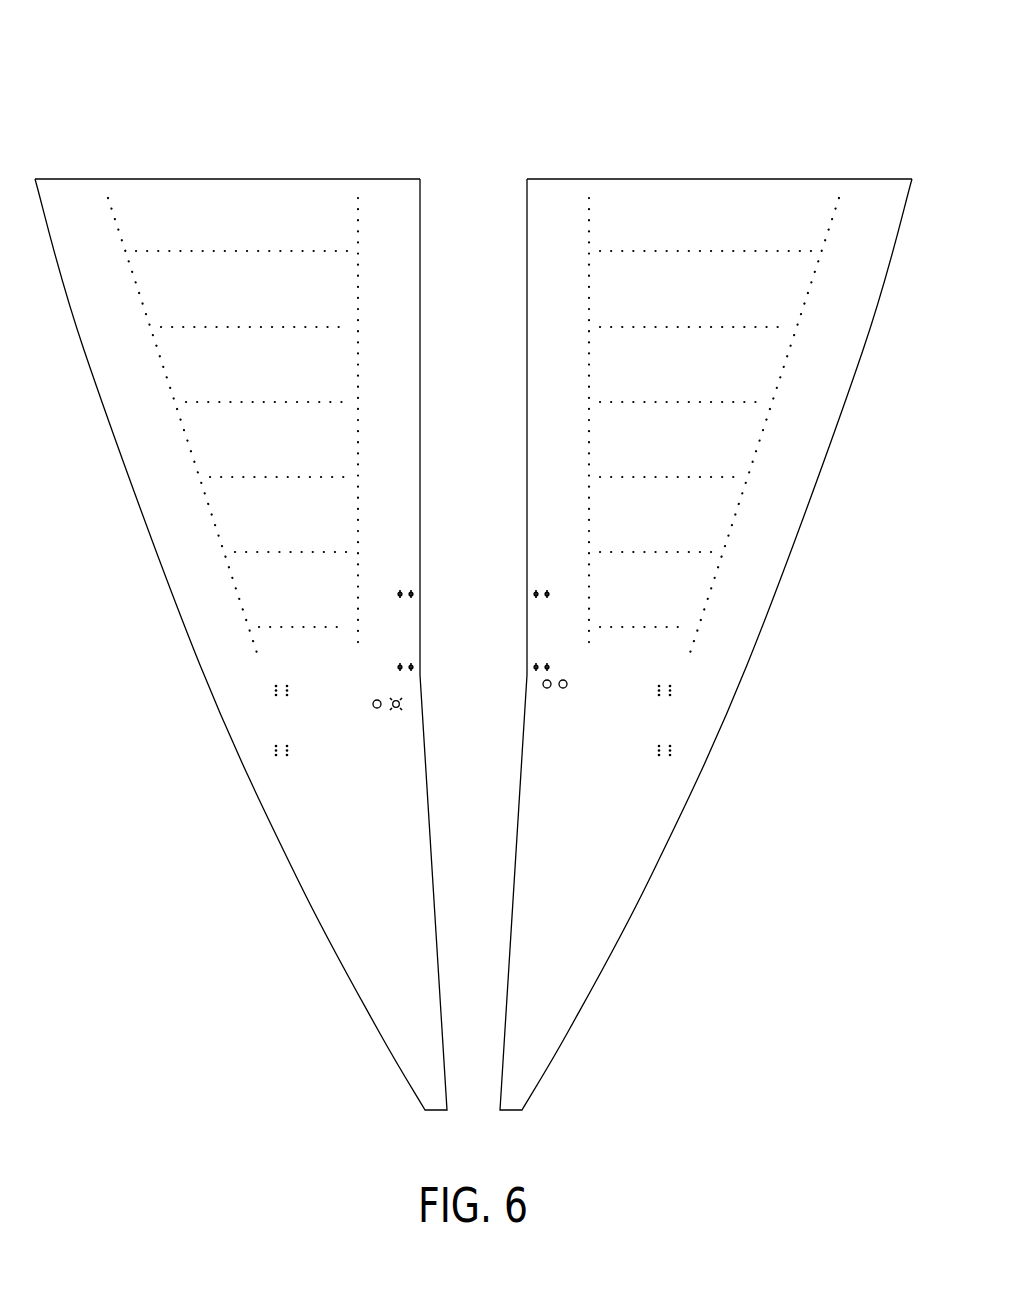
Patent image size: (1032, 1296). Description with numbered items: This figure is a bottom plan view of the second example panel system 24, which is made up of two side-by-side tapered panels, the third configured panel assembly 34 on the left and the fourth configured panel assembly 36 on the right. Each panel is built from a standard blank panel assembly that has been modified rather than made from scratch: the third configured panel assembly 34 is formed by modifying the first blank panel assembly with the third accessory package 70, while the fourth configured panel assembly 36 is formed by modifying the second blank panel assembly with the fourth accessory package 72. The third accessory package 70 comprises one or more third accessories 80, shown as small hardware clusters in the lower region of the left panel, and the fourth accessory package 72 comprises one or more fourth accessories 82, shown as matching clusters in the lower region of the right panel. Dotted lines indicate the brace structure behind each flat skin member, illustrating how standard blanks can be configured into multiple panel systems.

The second example panel system 24 is at (481, 56).
The third configured panel assembly 34 is at (225, 118).
The fourth configured panel assembly 36 is at (744, 118).
The third accessory package 70 is at (146, 746).
The fourth accessory package 72 is at (752, 770).
The third accessories 80 is at (290, 693).
The fourth accessories 82 is at (657, 695).